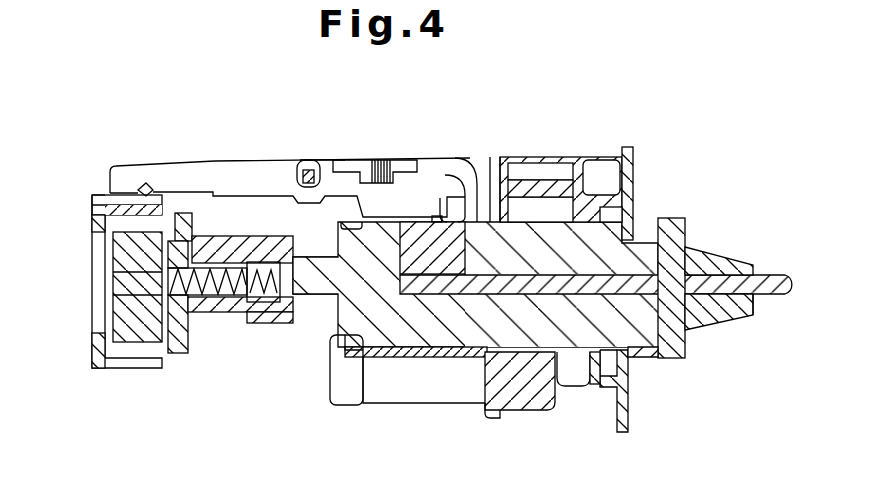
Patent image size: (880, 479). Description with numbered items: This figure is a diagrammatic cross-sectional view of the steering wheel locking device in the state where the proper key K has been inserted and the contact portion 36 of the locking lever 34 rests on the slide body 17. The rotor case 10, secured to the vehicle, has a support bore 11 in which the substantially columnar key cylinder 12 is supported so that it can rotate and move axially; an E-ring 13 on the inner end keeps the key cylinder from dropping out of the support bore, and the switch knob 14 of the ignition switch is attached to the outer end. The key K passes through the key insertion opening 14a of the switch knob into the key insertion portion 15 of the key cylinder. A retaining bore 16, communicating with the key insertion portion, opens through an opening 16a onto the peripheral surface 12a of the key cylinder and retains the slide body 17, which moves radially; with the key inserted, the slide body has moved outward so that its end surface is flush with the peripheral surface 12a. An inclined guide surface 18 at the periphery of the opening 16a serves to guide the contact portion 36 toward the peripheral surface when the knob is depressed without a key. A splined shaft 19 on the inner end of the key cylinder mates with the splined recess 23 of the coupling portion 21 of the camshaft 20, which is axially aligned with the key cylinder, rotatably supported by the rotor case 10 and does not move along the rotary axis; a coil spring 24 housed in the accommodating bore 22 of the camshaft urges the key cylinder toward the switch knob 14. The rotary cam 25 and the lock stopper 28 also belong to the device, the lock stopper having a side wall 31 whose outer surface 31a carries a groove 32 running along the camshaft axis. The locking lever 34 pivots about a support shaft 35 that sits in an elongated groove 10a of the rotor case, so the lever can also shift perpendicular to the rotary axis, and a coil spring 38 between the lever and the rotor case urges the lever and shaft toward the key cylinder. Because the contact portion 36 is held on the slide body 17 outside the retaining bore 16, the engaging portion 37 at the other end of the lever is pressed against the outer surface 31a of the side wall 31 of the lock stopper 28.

The rotor case 10 is at (580, 149).
The elongated groove 10a is at (316, 158).
The support bore 11 is at (569, 355).
The key cylinder 12 is at (455, 347).
The peripheral surface 12a is at (535, 220).
The E-ring 13 is at (343, 380).
The switch knob 14 is at (700, 250).
The key insertion opening 14a is at (757, 300).
The key insertion portion 15 is at (498, 291).
The retaining bore 16 is at (398, 266).
The opening 16a is at (393, 230).
The slide body 17 is at (468, 232).
The guide surface 18 is at (486, 220).
The splined shaft 19 is at (307, 296).
The camshaft 20 is at (202, 318).
The coupling portion 21 is at (243, 324).
The accommodating bore 22 is at (240, 262).
The splined recess 23 is at (264, 324).
The coil spring 24 is at (198, 250).
The rotary cam 25 is at (134, 343).
The lock stopper 28 is at (94, 368).
The side wall 31 is at (92, 209).
The outer surface 31a is at (92, 187).
The groove 32 is at (102, 193).
The locking lever 34 is at (196, 163).
The support shaft 35 is at (300, 172).
The contact portion 36 is at (465, 162).
The engaging portion 37 is at (150, 183).
The coil spring 38 is at (391, 161).
The key K is at (776, 275).